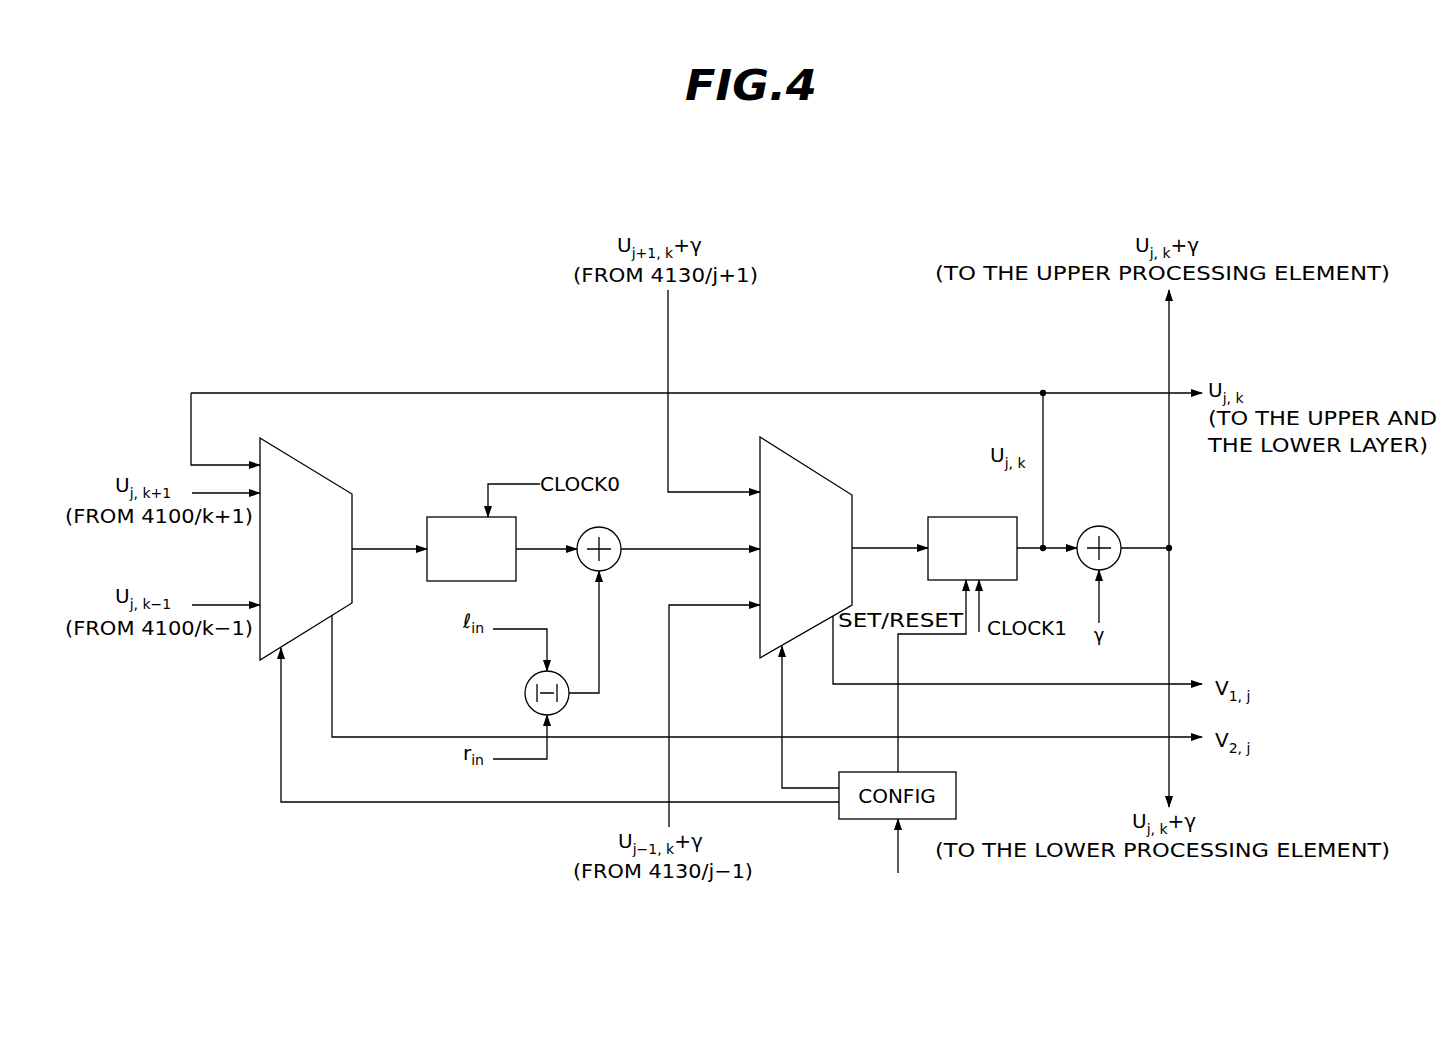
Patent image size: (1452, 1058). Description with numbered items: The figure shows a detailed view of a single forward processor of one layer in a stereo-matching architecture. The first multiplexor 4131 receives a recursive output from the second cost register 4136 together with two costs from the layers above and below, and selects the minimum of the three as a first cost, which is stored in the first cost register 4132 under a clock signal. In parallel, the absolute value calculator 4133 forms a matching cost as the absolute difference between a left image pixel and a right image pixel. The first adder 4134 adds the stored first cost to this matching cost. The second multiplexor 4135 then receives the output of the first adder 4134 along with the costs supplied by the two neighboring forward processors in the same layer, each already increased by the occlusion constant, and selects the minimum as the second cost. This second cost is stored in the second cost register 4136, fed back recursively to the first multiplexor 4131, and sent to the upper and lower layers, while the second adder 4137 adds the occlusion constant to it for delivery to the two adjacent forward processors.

The first multiplexor 4131 is at (308, 467).
The first cost register 4132 is at (447, 517).
The absolute value calculator 4133 is at (525, 694).
The first adder 4134 is at (614, 566).
The second multiplexor 4135 is at (805, 465).
The second cost register 4136 is at (950, 517).
The second adder 4137 is at (1100, 526).